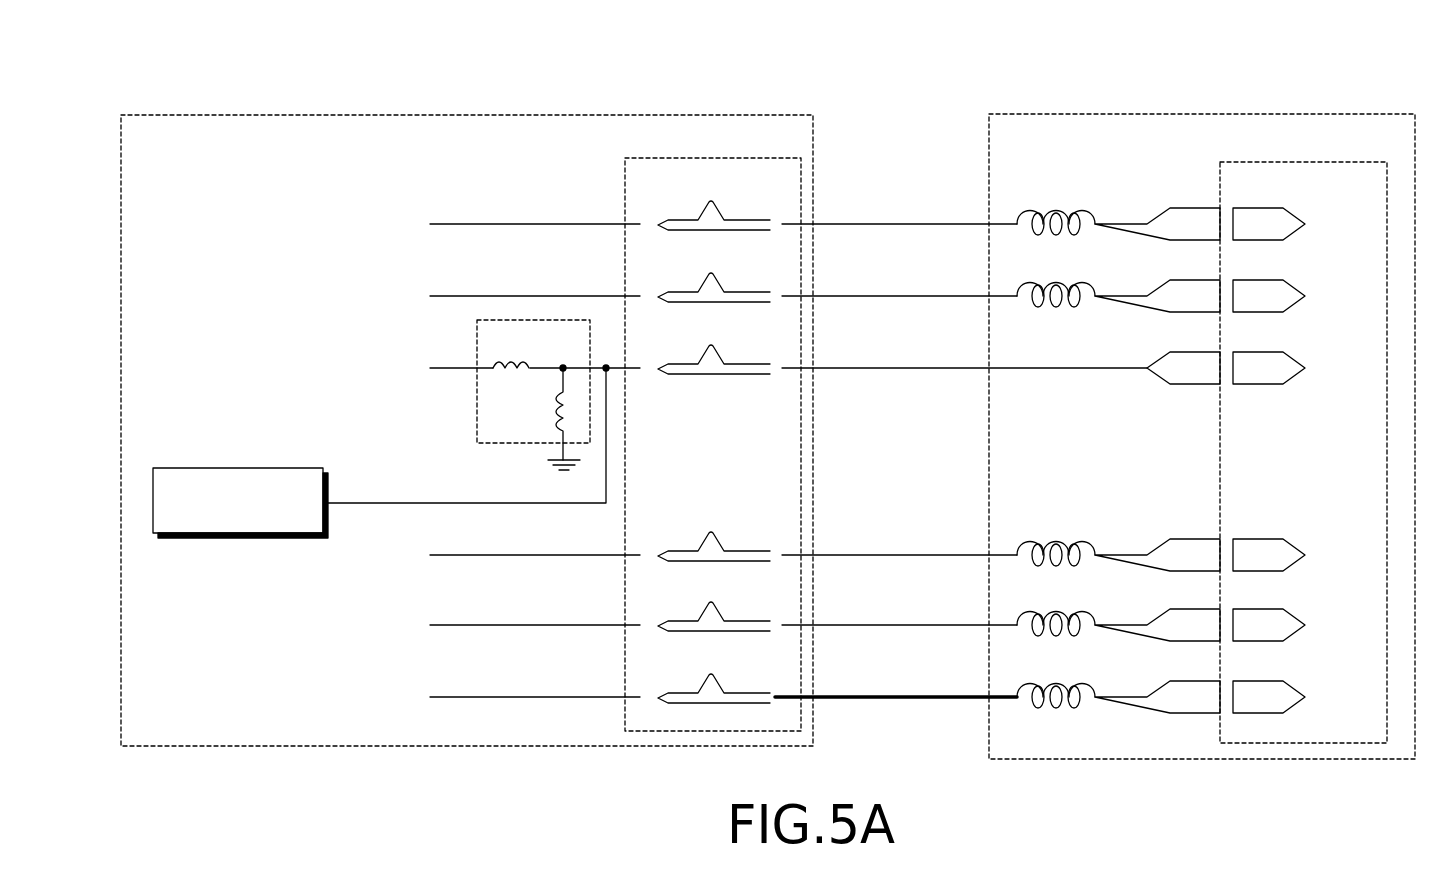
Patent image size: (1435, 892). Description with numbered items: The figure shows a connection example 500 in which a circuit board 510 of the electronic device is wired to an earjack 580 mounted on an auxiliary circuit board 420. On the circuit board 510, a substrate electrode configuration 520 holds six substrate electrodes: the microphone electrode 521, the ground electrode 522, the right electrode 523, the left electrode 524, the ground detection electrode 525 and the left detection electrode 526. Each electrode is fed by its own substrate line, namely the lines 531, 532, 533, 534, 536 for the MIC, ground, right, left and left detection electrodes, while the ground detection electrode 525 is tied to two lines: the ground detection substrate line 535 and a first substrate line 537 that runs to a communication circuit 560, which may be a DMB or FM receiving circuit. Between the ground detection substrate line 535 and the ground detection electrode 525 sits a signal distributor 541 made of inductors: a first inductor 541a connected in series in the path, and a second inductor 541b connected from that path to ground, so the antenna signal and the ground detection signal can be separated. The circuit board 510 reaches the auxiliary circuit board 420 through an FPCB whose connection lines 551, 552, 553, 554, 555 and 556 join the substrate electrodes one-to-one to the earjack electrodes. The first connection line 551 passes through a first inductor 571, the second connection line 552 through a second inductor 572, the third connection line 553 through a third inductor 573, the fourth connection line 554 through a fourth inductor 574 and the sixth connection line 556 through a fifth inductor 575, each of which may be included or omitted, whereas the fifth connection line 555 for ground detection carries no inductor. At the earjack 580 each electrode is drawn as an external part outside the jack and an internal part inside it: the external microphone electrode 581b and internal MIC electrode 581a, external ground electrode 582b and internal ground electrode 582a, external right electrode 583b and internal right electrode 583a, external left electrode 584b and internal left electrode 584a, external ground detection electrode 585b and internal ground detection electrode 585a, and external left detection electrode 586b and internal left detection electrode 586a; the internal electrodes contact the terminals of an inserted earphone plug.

The electronic device circuit 500 is at (1276, 61).
The circuit board 510 is at (562, 115).
The substrate electrode configuration 520 is at (720, 158).
The auxiliary circuit board 420 is at (1176, 114).
The earjack 580 is at (1310, 162).
The communication circuit 560 is at (240, 466).
The microphone electrode 521 is at (748, 218).
The ground electrode 522 is at (748, 691).
The right electrode 523 is at (748, 549).
The left electrode 524 is at (748, 619).
The ground detection electrode 525 is at (748, 362).
The left detection electrode 526 is at (748, 290).
The substrate line 531 is at (509, 224).
The substrate line 532 is at (509, 697).
The substrate line 533 is at (509, 555).
The substrate line 534 is at (509, 625).
The ground detection substrate line 535 is at (446, 366).
The substrate line 536 is at (509, 296).
The first substrate line 537 is at (492, 503).
The signal distributor 541 is at (476, 423).
The first inductor 541a is at (525, 364).
The second inductor 541b is at (553, 412).
The first connection line 551 is at (884, 224).
The second connection line 552 is at (884, 697).
The third connection line 553 is at (884, 555).
The fourth connection line 554 is at (884, 625).
The fifth connection line 555 is at (884, 368).
The sixth connection line 556 is at (884, 296).
The first inductor 571 is at (1066, 208).
The second inductor 572 is at (1066, 681).
The third inductor 573 is at (1066, 539).
The fourth inductor 574 is at (1066, 609).
The fifth inductor 575 is at (1066, 280).
The internal MIC electrode 581a is at (1298, 214).
The external microphone electrode 581b is at (1200, 206).
The internal ground electrode 582a is at (1298, 685).
The external ground electrode 582b is at (1200, 679).
The internal right electrode 583a is at (1298, 544).
The external right electrode 583b is at (1200, 537).
The internal left electrode 584a is at (1298, 614).
The external left electrode 584b is at (1200, 607).
The internal ground detection electrode 585a is at (1298, 357).
The external ground detection electrode 585b is at (1200, 350).
The internal left detection electrode 586a is at (1298, 284).
The external left detection electrode 586b is at (1200, 278).